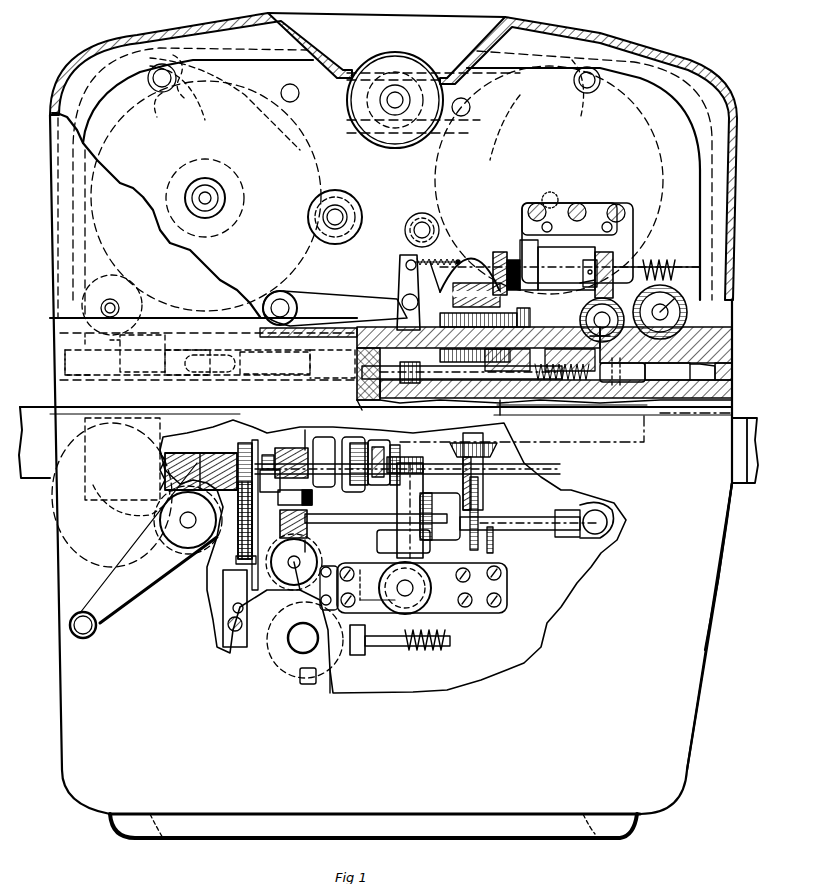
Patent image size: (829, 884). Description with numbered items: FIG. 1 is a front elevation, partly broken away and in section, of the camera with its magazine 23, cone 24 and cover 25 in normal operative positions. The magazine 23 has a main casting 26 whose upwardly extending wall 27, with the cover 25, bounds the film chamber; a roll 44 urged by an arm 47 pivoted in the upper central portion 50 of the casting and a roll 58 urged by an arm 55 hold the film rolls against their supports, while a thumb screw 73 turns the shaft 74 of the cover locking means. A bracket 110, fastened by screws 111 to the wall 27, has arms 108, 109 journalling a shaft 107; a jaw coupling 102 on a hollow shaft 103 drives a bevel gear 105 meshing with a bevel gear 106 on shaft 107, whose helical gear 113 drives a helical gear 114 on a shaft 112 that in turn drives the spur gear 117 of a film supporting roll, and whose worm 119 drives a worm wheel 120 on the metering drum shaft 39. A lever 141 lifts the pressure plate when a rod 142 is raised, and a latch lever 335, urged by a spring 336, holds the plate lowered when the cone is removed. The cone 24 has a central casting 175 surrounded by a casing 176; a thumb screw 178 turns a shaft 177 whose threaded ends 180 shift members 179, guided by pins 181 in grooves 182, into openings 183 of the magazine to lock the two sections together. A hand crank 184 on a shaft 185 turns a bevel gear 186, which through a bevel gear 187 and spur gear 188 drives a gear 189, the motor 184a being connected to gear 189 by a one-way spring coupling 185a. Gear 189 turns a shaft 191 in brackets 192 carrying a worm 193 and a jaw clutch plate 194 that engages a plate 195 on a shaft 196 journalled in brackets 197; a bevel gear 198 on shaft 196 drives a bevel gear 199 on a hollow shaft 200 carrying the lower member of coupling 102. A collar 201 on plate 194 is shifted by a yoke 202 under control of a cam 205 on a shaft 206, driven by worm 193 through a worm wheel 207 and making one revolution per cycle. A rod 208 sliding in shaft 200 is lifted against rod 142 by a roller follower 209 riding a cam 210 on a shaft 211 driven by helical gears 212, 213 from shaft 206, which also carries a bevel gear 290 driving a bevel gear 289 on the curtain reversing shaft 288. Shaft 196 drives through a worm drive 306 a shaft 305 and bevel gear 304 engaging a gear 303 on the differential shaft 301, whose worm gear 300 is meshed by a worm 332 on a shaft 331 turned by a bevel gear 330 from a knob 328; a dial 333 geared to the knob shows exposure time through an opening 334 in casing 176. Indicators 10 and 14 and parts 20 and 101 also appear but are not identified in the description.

The section line 10 is at (748, 417).
The section line 14 is at (261, 545).
The base 20 is at (375, 849).
The magazine 23 is at (60, 323).
The cone 24 is at (690, 712).
The cover 25 is at (757, 218).
The main casting 26 is at (746, 351).
The wall 27 is at (285, 190).
The shaft 39 is at (686, 292).
The roll 44 is at (157, 117).
The arm 47 is at (180, 100).
The upper central portion 50 is at (318, 175).
The arm 55 is at (515, 85).
The roll 58 is at (576, 105).
The thumb screw 73 is at (365, 70).
The shaft 74 is at (387, 100).
The cam 101 is at (148, 420).
The jaw coupling 102 is at (445, 372).
The hollow shaft 103 is at (465, 318).
The bevel gear 105 is at (460, 283).
The bevel gear 106 is at (500, 252).
The shaft 107 is at (567, 277).
The arm 108 is at (526, 252).
The arm 109 is at (620, 265).
The bracket 110 is at (596, 215).
The screws 111 is at (572, 204).
The shaft 112 is at (583, 315).
The helical gear 113 is at (590, 292).
The helical gear 114 is at (582, 328).
The spur gear 117 is at (668, 305).
The worm 119 is at (660, 268).
The worm wheel 120 is at (730, 327).
The lever 141 is at (345, 308).
The rod 142 is at (510, 356).
The central casting 175 is at (542, 406).
The casing 176 is at (708, 612).
The shaft 177 is at (355, 390).
The thumb screw 178 is at (350, 360).
The members 179 is at (612, 386).
The ends 180 is at (560, 385).
The pins 181 is at (650, 385).
The longitudinal grooves 182 is at (160, 352).
The openings 183 is at (700, 372).
The hand crank 184 is at (95, 633).
The motor 184a is at (58, 550).
The shaft 185 is at (185, 523).
The spring coupling 185a is at (212, 453).
The bevel gear 186 is at (188, 560).
The bevel gear 187 is at (234, 601).
The spur gear 188 is at (256, 520).
The gear 189 is at (245, 445).
The shaft 191 is at (312, 492).
The brackets 192 is at (290, 443).
The worm 193 is at (322, 437).
The jaw clutch plate 194 is at (380, 440).
The plate 195 is at (383, 463).
The shaft 196 is at (434, 514).
The brackets 197 is at (392, 486).
The bevel gear 198 is at (483, 472).
The bevel gear 199 is at (497, 452).
The hollow shaft 200 is at (512, 417).
The collar 201 is at (380, 440).
The yoke 202 is at (352, 492).
The cam 205 is at (305, 432).
The shaft 206 is at (273, 481).
The worm wheel 207 is at (250, 480).
The rod 208 is at (525, 398).
The roller cam follower 209 is at (478, 494).
The cam 210 is at (478, 518).
The shaft 211 is at (488, 535).
The helical gear 212 is at (308, 540).
The helical gear 213 is at (315, 515).
The shaft 288 is at (300, 580).
The bevel gear 289 is at (280, 568).
The bevel gear 290 is at (255, 556).
The worm gear 300 is at (438, 614).
The shaft 301 is at (413, 583).
The gear 303 is at (395, 595).
The bevel gear 304 is at (395, 580).
The shaft 305 is at (403, 541).
The worm and worm wheel drive 306 is at (420, 457).
The knob 328 is at (300, 622).
The bevel gear 330 is at (357, 640).
The shaft 331 is at (390, 646).
The worm 332 is at (430, 650).
The dial 333 is at (340, 672).
The opening 334 is at (306, 685).
The lever 335 is at (400, 280).
The spring 336 is at (432, 256).